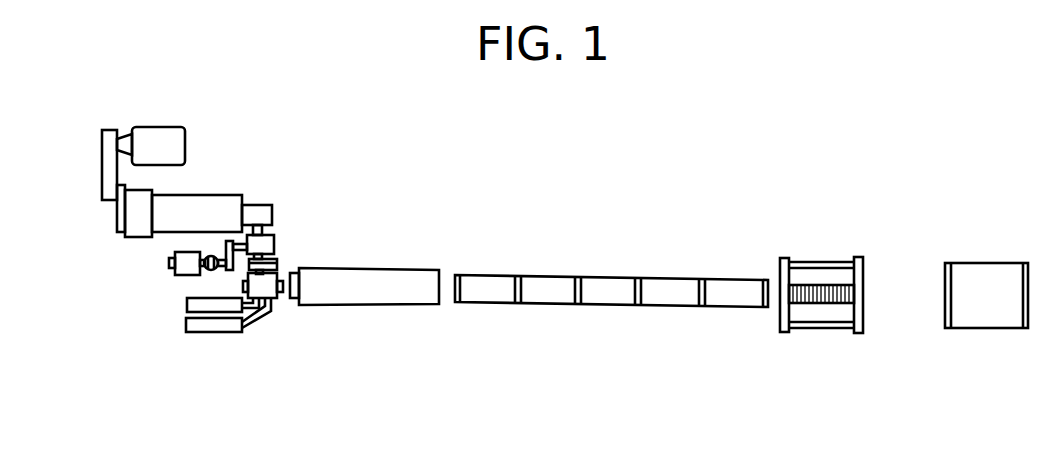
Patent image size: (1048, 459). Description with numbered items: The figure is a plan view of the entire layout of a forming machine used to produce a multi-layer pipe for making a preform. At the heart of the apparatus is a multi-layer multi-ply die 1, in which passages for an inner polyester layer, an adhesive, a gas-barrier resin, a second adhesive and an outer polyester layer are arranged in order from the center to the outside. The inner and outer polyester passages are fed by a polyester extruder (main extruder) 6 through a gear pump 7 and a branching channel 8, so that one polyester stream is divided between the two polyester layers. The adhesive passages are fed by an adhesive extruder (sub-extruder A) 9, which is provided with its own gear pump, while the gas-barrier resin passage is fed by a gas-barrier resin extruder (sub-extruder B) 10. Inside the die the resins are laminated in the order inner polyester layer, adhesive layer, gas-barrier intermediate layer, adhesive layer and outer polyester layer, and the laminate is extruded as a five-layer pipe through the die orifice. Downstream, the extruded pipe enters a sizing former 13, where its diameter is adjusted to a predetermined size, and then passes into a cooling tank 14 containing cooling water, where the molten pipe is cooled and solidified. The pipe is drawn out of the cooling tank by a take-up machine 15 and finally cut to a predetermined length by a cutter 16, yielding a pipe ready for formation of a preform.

The multi-layer multi-ply die 1 is at (277, 298).
The polyester extruder (main extruder) 6 is at (224, 202).
The gear pump 7 is at (275, 241).
The branching channel 8 is at (279, 264).
The adhesive extruder (sub-extruder A) 9 is at (187, 305).
The gas-barrier resin extruder (sub-extruder B) 10 is at (187, 325).
The sizing former 13 is at (407, 277).
The cooling tank 14 is at (617, 283).
The take-up machine 15 is at (830, 330).
The cutter 16 is at (1004, 322).